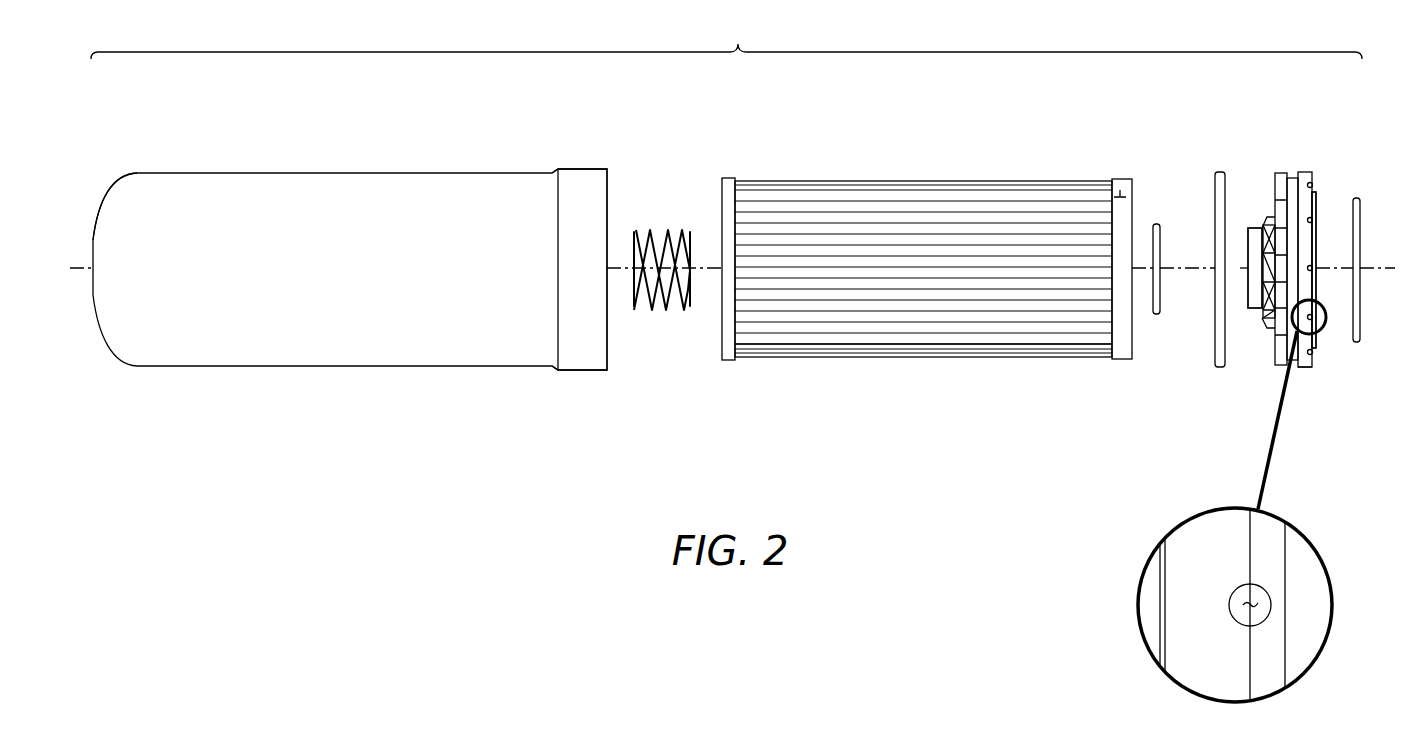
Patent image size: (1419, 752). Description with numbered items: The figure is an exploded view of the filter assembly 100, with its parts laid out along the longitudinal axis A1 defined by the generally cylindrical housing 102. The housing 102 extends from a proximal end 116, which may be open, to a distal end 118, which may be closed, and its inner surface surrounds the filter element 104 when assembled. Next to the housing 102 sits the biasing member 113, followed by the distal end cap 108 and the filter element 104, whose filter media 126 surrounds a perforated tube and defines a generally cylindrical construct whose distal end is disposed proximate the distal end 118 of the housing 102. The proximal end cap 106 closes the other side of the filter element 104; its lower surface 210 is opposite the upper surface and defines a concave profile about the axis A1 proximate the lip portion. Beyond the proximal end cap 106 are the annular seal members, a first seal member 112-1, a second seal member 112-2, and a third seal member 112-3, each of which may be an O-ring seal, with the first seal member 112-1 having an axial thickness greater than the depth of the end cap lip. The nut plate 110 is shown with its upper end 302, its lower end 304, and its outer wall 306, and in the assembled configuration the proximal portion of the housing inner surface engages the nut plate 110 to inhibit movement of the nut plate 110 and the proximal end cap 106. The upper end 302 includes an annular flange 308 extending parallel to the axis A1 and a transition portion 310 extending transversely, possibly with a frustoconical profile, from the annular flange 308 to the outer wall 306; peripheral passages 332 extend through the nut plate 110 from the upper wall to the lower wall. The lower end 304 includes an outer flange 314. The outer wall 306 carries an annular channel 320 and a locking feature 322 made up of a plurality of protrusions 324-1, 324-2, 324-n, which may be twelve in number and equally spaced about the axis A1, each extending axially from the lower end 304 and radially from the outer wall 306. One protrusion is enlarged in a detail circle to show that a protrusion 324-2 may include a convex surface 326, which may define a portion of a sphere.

The filter assembly 100 is at (726, 36).
The longitudinal axis A1 is at (74, 270).
The housing 102 is at (236, 372).
The distal end 118 is at (98, 228).
The proximal end 116 is at (608, 354).
The biasing member 113 is at (654, 224).
The distal end cap 108 is at (727, 363).
The proximal end cap 106 is at (1120, 362).
The filter element 104 is at (839, 363).
The filter media 126 is at (893, 342).
The lower surface 210 is at (1120, 190).
The first seal member 112-1 is at (1158, 224).
The second seal member 112-2 is at (1218, 176).
The third seal member 112-3 is at (1360, 200).
The nut plate 110 is at (1282, 285).
The annular flange 308 is at (1255, 228).
The peripheral passages 332 is at (1268, 265).
The transition portion 310 is at (1252, 310).
The upper end 302 is at (1270, 217).
The annular channel 320 is at (1291, 180).
The lower end 304 is at (1311, 184).
The locking feature 322 is at (1318, 184).
The outer flange 314 is at (1318, 210).
The protrusion 324-n is at (1313, 270).
The protrusion 324-2 is at (1314, 322).
The protrusion 324-1 is at (1314, 356).
The outer wall 306 is at (1302, 368).
The convex surface 326 is at (1250, 627).